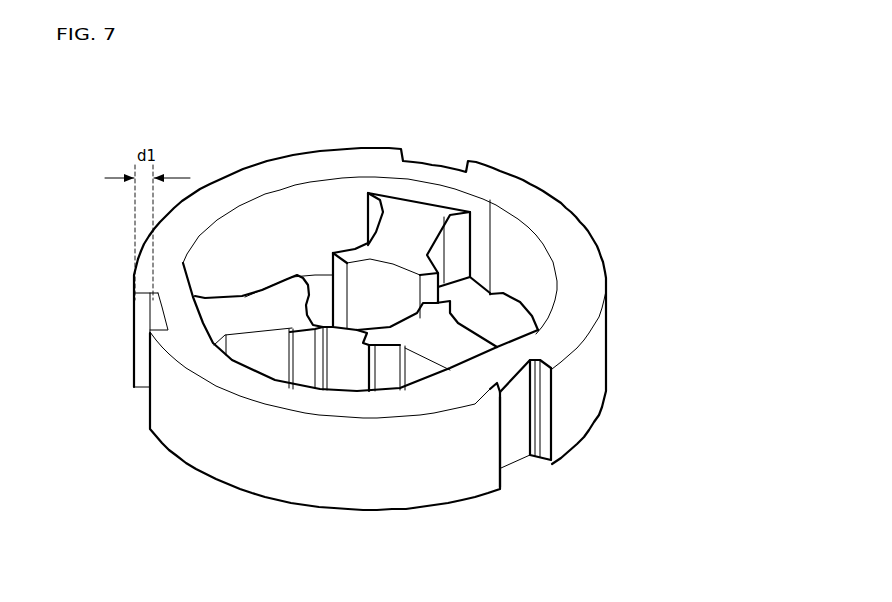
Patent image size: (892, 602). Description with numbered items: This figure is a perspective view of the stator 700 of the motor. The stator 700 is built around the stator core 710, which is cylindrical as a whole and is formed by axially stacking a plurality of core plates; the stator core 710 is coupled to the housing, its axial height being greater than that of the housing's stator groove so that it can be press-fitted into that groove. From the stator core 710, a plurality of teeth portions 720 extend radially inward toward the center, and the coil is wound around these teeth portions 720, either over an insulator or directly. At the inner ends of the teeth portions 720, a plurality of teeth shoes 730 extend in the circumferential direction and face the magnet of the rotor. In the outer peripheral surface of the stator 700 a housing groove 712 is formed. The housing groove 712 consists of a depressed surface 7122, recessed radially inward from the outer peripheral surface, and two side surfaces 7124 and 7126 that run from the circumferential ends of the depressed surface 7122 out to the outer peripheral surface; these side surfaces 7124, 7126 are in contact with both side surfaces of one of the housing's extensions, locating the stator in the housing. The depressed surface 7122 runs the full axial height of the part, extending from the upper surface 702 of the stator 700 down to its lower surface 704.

The stator 700 is at (548, 102).
The upper surface 702 is at (117, 327).
The lower surface 704 is at (325, 443).
The stator core 710 is at (470, 425).
The housing groove 712 is at (570, 417).
The depressed surface 7122 is at (543, 480).
The side surface 7124 is at (533, 474).
The side surface 7126 is at (605, 410).
The teeth portions 720 is at (363, 256).
The teeth shoes 730 is at (360, 212).